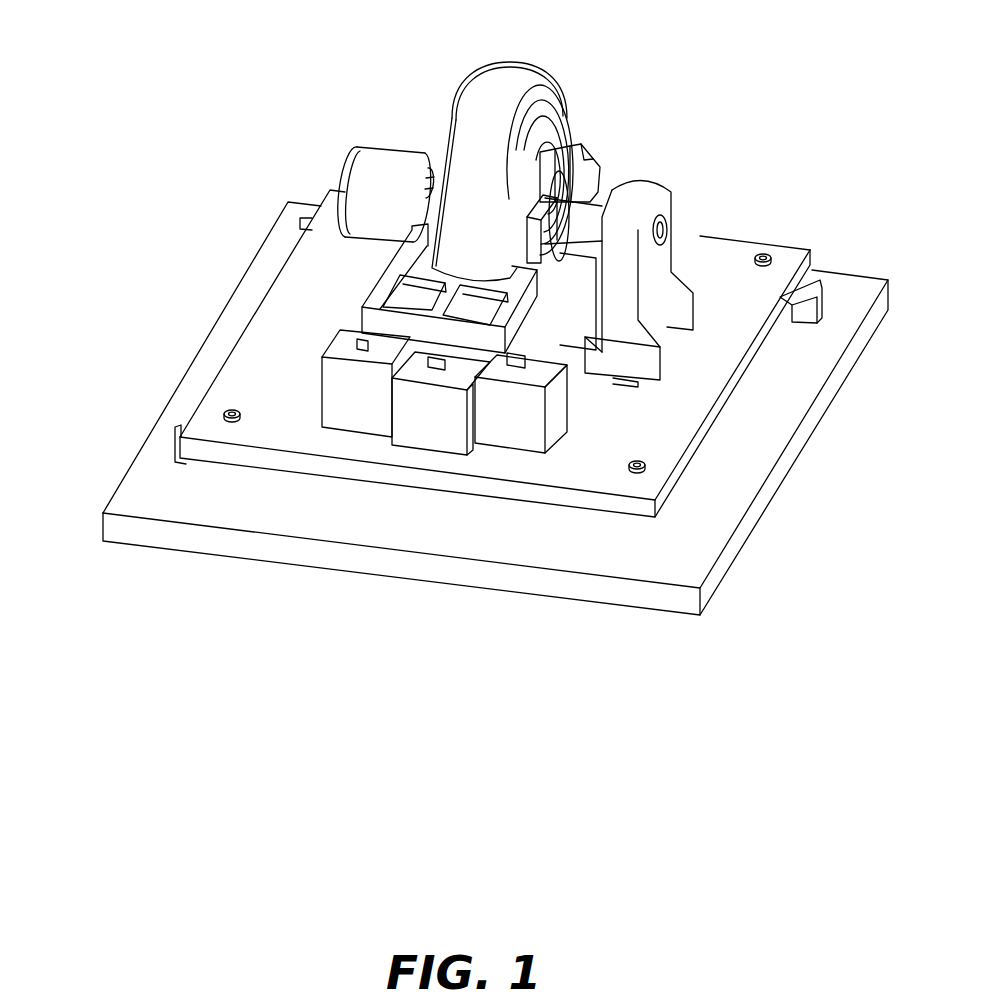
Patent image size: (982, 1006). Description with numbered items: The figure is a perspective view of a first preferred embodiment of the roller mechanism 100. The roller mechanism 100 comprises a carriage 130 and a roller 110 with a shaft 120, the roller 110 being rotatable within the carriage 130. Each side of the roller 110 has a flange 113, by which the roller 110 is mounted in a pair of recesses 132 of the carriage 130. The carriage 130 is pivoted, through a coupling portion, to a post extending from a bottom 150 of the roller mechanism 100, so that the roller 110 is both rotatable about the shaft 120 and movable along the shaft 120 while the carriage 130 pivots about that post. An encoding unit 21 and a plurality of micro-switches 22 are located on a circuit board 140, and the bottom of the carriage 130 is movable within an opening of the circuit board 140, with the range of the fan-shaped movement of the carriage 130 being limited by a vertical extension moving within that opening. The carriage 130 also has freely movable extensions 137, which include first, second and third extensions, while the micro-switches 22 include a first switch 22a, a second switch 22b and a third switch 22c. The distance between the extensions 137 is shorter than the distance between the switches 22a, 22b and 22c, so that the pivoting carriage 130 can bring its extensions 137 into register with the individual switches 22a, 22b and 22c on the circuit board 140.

The roller mechanism 100 is at (722, 100).
The roller 110 is at (490, 92).
The flange 113 is at (571, 137).
The shaft 120 is at (362, 165).
The carriage 130 is at (383, 280).
The recesses 132 is at (574, 170).
The freely movable extensions 137 is at (378, 354).
The circuit board 140 is at (218, 392).
The bottom 150 is at (133, 480).
The encoding unit 21 is at (662, 260).
The micro-switches 22 is at (475, 640).
The first switch 22a is at (432, 430).
The second switch 22b is at (503, 438).
The third switch 22c is at (353, 417).